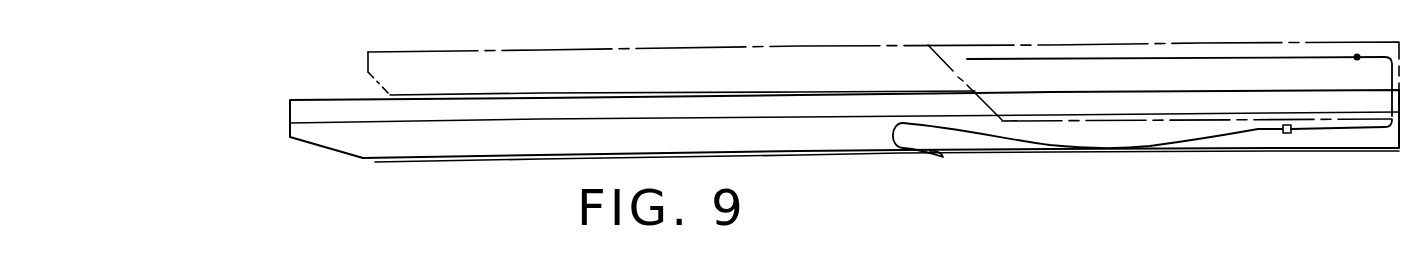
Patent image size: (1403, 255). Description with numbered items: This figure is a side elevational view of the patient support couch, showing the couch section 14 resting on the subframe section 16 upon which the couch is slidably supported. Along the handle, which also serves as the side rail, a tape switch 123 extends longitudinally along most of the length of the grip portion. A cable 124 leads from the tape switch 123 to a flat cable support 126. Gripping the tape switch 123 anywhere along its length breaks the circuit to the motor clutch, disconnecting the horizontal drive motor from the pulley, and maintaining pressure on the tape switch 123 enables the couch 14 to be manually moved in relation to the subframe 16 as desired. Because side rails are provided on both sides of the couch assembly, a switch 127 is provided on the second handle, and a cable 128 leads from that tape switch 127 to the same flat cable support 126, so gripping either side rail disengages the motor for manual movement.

The couch section 14 is at (400, 72).
The subframe section 16 is at (343, 143).
The tape switch 123 is at (1183, 57).
The cable 124 is at (1385, 127).
The flat cable support 126 is at (1289, 125).
The switch 127 is at (923, 149).
The cable 128 is at (1232, 135).